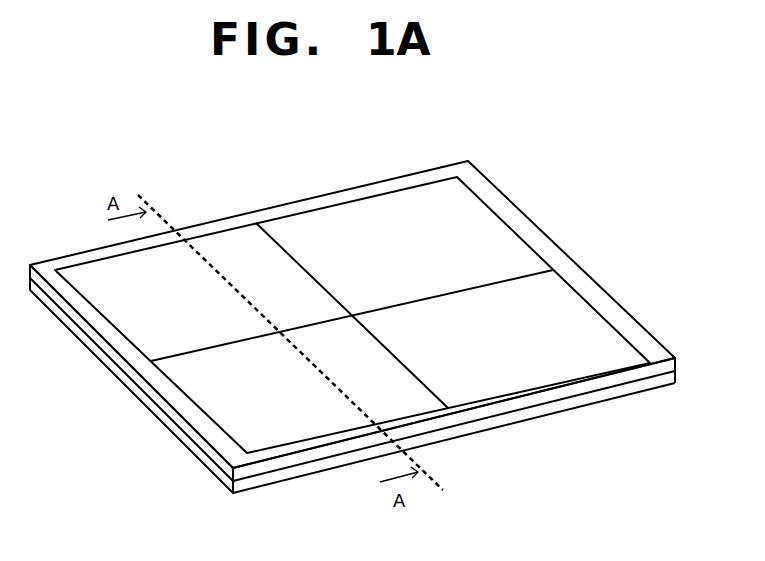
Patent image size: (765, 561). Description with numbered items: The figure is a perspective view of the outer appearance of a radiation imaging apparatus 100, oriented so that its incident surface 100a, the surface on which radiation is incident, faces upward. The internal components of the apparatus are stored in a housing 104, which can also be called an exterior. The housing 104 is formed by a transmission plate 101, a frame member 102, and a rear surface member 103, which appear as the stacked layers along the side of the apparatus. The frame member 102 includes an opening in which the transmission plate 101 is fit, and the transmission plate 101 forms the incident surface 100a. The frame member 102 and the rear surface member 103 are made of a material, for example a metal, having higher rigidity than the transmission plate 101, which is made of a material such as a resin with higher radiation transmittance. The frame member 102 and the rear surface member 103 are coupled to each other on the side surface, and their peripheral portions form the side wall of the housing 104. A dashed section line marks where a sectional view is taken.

The radiation imaging apparatus 100 is at (352, 314).
The incident surface 100a is at (397, 215).
The transmission plate 101 is at (198, 385).
The frame member 102 is at (192, 420).
The rear surface member 103 is at (192, 450).
The housing 104 is at (352, 381).